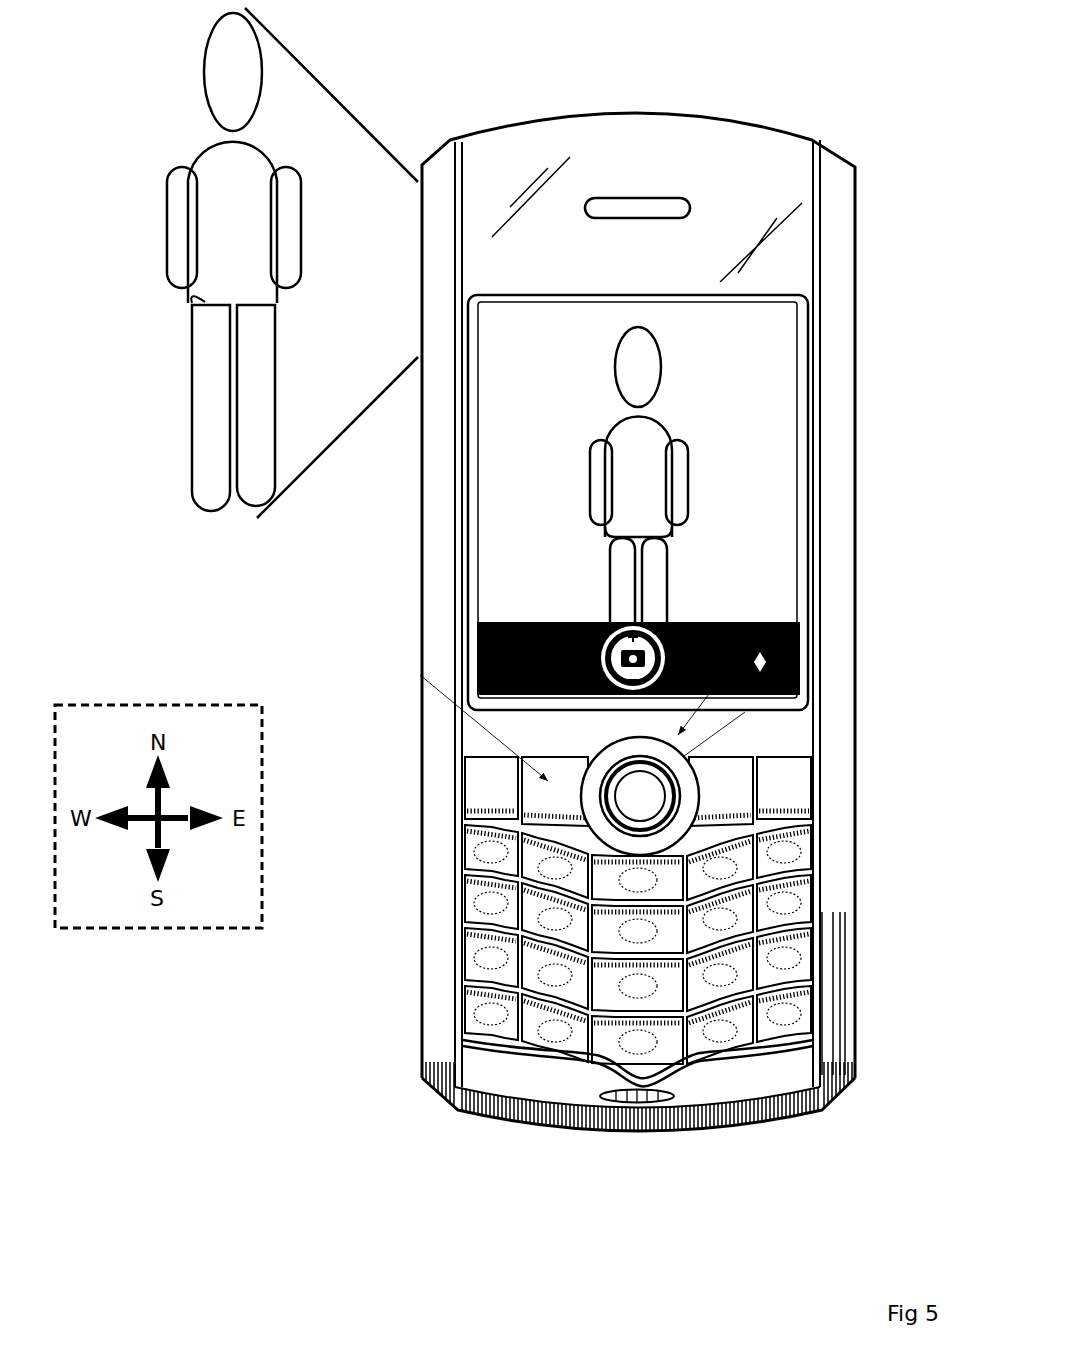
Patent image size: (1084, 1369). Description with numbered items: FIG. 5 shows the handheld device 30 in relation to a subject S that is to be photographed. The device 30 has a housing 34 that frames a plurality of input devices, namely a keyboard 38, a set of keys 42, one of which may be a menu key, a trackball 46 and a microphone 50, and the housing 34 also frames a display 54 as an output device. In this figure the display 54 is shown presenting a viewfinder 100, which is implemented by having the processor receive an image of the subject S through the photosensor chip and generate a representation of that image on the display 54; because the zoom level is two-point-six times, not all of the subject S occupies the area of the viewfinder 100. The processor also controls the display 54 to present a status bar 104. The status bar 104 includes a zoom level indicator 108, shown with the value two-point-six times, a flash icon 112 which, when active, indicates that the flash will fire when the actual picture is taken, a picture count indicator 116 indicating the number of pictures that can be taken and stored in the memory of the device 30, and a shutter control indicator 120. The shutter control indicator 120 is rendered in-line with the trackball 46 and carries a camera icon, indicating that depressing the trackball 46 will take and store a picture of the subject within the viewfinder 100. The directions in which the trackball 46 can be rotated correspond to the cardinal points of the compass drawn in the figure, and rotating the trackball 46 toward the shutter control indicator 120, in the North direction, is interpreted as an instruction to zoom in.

The device 30 is at (568, 651).
The housing 34 is at (420, 947).
The keyboard 38 is at (804, 953).
The set of keys 42 is at (484, 777).
The trackball 46 is at (642, 791).
The microphone 50 is at (641, 1104).
The display 54 is at (568, 508).
The viewfinder 100 is at (524, 515).
The status bar 104 is at (568, 587).
The zoom level indicator 108 is at (768, 571).
The flash icon 112 is at (780, 641).
The picture count indicator 116 is at (490, 652).
The shutter control indicator 120 is at (658, 624).
The subject S is at (212, 520).